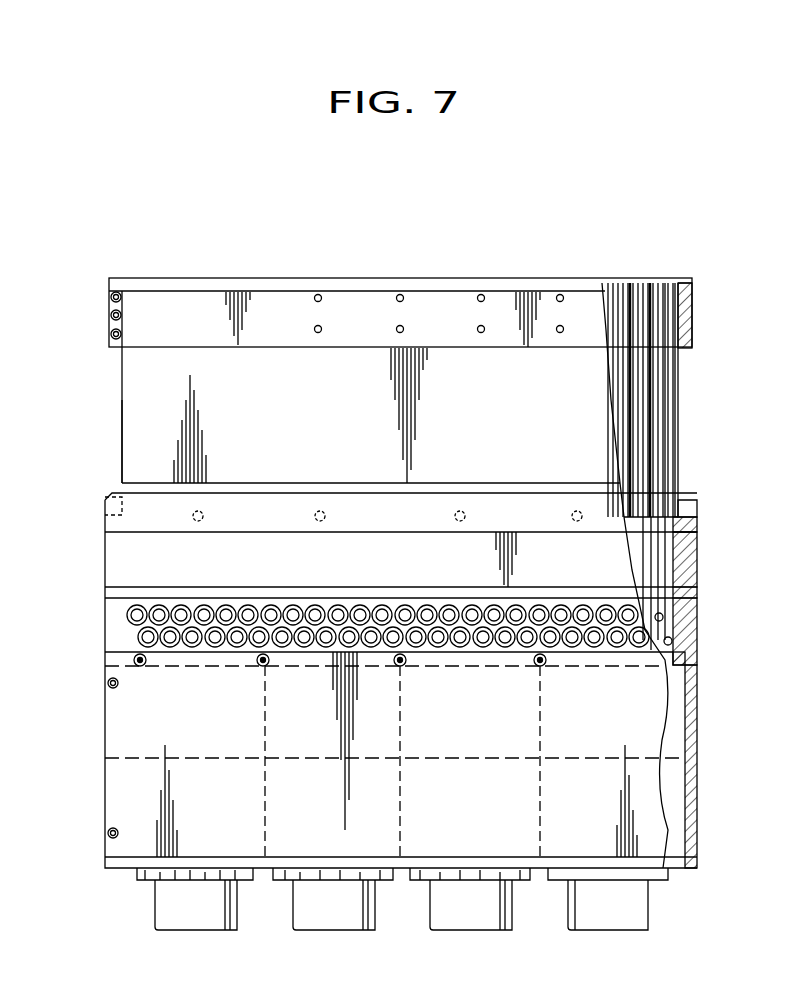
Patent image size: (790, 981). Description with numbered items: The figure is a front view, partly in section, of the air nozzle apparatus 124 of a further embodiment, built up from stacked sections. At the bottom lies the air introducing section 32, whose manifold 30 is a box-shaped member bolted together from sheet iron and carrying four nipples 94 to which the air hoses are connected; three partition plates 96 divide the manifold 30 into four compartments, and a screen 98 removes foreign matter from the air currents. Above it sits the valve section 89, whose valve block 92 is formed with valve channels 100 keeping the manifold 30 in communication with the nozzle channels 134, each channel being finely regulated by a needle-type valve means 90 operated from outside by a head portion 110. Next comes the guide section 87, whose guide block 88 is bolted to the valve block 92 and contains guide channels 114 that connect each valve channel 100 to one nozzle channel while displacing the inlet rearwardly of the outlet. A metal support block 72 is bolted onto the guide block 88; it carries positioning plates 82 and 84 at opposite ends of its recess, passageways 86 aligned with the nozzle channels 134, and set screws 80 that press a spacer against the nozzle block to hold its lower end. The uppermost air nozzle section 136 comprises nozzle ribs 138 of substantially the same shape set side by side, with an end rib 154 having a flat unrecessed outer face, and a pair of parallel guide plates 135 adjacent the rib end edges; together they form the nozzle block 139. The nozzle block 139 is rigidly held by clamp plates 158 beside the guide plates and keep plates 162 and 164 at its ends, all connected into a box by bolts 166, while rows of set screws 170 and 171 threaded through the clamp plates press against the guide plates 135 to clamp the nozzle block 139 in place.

The manifold 30 is at (692, 778).
The air introducing section 32 is at (72, 940).
The support block 72 is at (690, 530).
The set screws 80 is at (572, 516).
The positioning plate 82 is at (680, 500).
The positioning plate 84 is at (112, 497).
The passageways 86 is at (688, 545).
The guide section 87 is at (72, 532).
The guide block 88 is at (688, 578).
The valve section 89 is at (72, 592).
The valve means 90 is at (225, 656).
The valve block 92 is at (688, 615).
The nipples 94 is at (612, 920).
The partition plates 96 is at (562, 822).
The screen 98 is at (680, 758).
The valve channels 100 is at (662, 680).
The head portion 110 is at (572, 668).
The guide channels 114 is at (640, 568).
The air nozzle apparatus 124 is at (652, 274).
The nozzle channels 134 is at (672, 293).
The guide plate 135 is at (354, 436).
The air nozzle section 136 is at (72, 278).
The nozzle ribs 138 is at (665, 368).
The nozzle block 139 is at (145, 438).
The end rib 154 is at (676, 405).
The clamp plate 158 is at (190, 324).
The keep plate 162 is at (690, 292).
The keep plate 164 is at (118, 280).
The bolts 166 is at (112, 345).
The set screws 170 is at (482, 292).
The set screws 171 is at (481, 333).